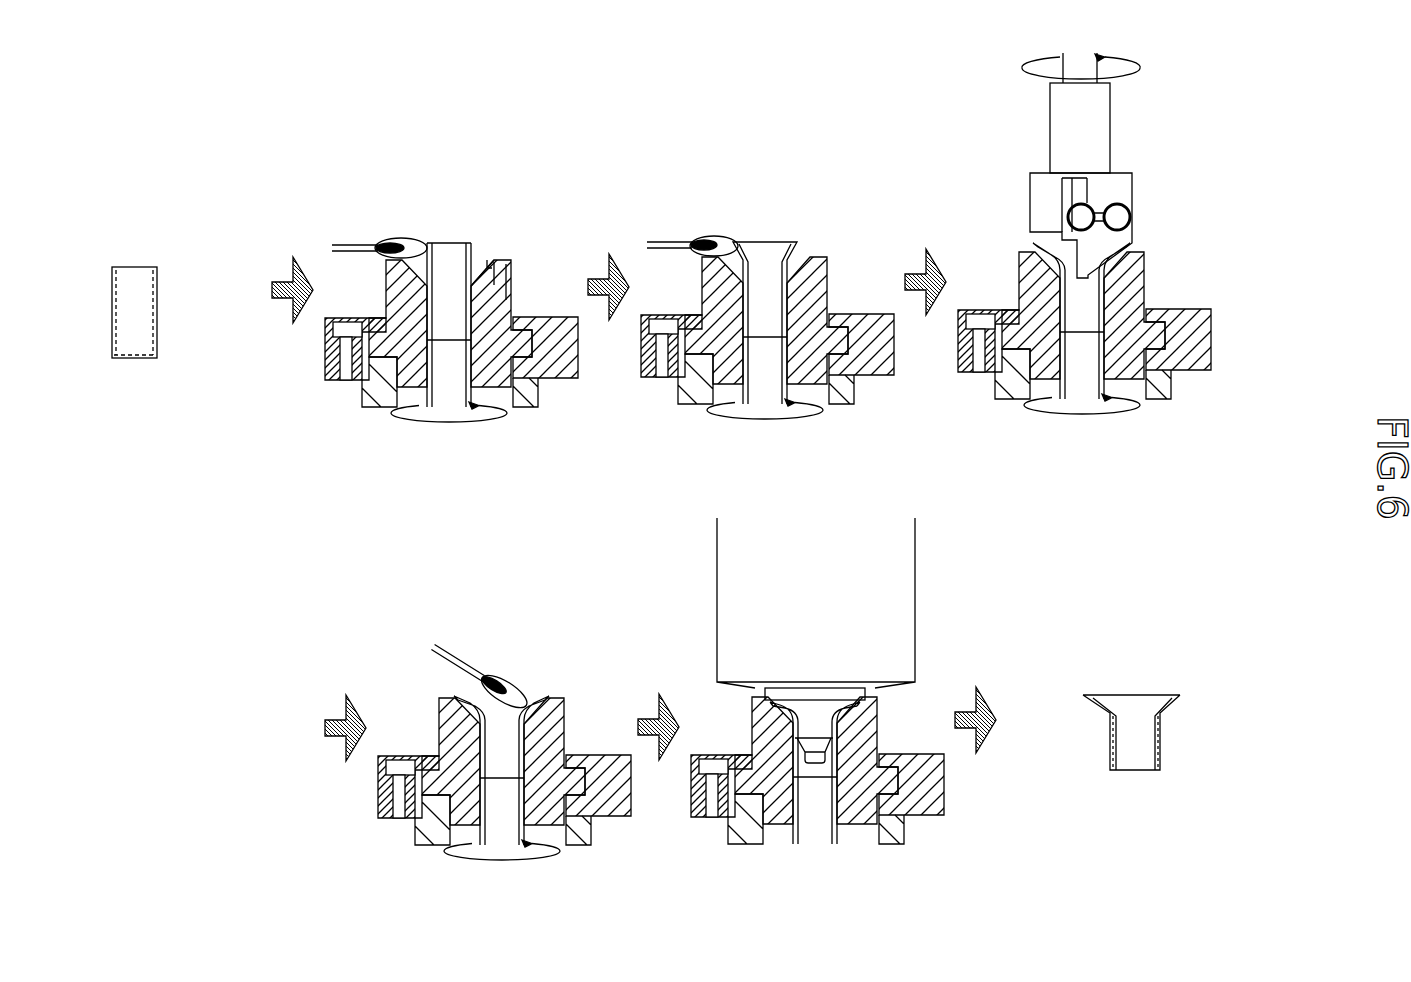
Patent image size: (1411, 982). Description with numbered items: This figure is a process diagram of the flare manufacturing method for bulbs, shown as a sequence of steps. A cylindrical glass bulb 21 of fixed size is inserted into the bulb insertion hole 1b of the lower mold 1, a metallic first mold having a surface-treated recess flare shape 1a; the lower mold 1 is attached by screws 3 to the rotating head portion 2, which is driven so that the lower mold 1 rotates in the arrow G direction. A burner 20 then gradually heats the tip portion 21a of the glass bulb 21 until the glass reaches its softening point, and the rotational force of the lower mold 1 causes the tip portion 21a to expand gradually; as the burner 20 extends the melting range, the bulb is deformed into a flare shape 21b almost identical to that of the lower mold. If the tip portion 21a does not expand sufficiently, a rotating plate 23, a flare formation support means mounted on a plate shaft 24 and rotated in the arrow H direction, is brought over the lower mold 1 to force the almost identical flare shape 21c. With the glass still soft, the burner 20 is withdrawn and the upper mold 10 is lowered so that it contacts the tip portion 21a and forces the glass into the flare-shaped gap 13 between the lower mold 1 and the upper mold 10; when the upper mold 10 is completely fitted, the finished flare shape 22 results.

The lower mold 1 is at (490, 337).
The recess flare shape 1a is at (483, 267).
The bulb insertion hole 1b is at (497, 282).
The rotating head portion 2 is at (557, 370).
The screws 3 is at (330, 330).
The upper mold 10 is at (905, 580).
The flare-shaped gap 13 is at (883, 700).
The burner 20 is at (352, 245).
The glass bulb 21 is at (115, 360).
The tip portion 21a is at (470, 247).
The flare shape 21b is at (530, 707).
The almost identical flare shape 21c is at (1130, 240).
The flare shape 22 is at (1177, 697).
The rotating plate 23 is at (1122, 190).
The plate shaft 24 is at (1105, 130).
The arrow G direction G is at (449, 431).
The arrow H direction H is at (1090, 68).